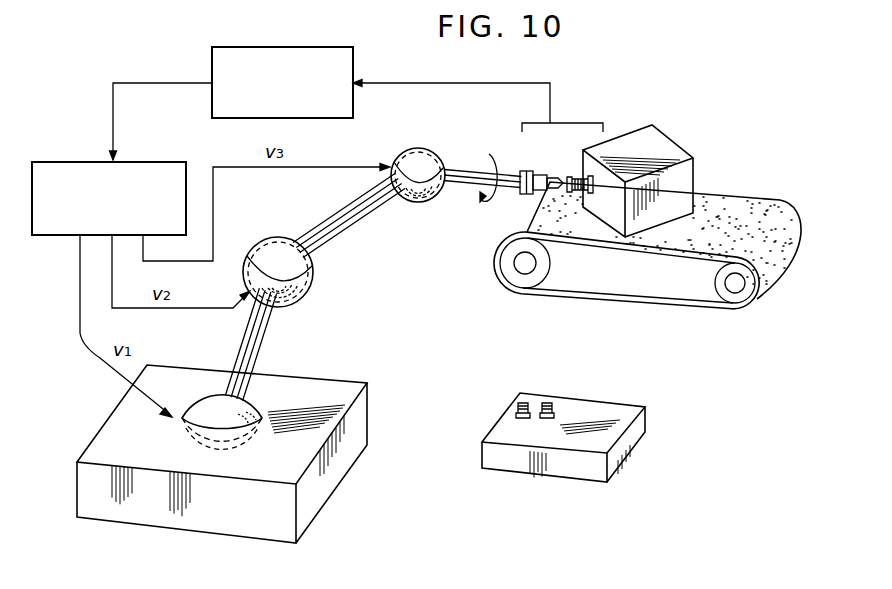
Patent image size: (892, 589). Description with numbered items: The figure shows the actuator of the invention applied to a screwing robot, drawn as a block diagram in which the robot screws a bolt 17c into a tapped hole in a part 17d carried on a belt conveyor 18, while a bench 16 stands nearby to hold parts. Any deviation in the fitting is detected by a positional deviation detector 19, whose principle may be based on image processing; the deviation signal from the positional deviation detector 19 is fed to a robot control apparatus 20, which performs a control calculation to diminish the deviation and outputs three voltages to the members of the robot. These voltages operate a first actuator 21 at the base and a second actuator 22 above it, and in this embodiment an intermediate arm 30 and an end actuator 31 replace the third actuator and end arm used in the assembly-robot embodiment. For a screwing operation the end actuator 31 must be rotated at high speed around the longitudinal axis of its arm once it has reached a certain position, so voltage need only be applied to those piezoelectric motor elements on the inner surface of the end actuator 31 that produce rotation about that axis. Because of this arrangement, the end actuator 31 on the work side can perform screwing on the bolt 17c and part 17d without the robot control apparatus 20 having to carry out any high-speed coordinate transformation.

The bench 16 is at (593, 401).
The bolt 17c is at (578, 180).
The part 17d is at (670, 143).
The belt conveyor 18 is at (725, 200).
The positional deviation detector 19 is at (212, 60).
The robot control apparatus 20 is at (72, 161).
The first actuator 21 is at (344, 384).
The second actuator 22 is at (273, 337).
The intermediate arm 30 is at (343, 237).
The end actuator 31 is at (424, 150).